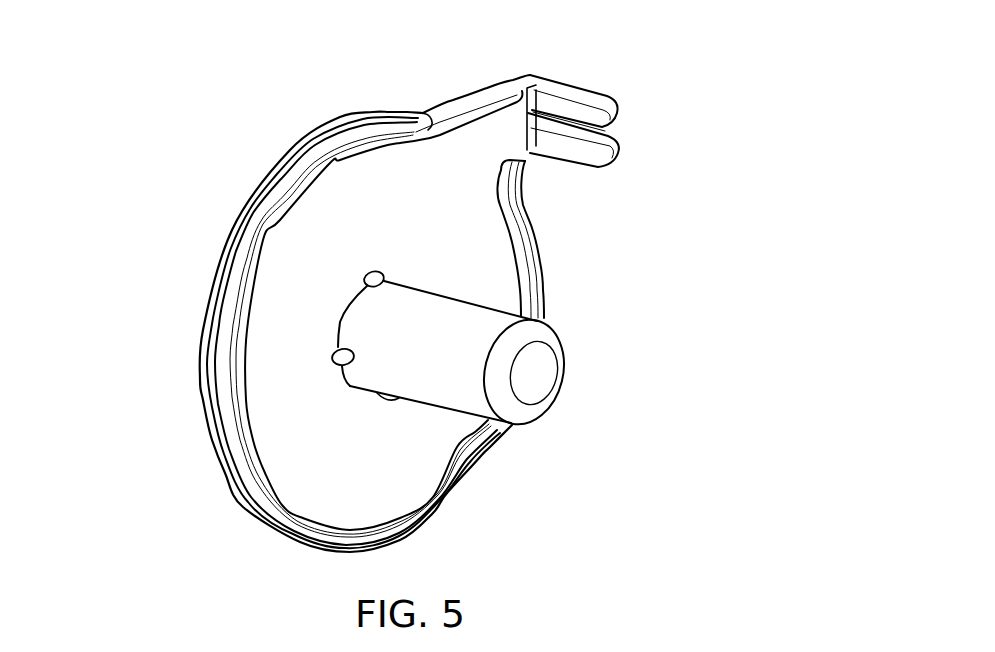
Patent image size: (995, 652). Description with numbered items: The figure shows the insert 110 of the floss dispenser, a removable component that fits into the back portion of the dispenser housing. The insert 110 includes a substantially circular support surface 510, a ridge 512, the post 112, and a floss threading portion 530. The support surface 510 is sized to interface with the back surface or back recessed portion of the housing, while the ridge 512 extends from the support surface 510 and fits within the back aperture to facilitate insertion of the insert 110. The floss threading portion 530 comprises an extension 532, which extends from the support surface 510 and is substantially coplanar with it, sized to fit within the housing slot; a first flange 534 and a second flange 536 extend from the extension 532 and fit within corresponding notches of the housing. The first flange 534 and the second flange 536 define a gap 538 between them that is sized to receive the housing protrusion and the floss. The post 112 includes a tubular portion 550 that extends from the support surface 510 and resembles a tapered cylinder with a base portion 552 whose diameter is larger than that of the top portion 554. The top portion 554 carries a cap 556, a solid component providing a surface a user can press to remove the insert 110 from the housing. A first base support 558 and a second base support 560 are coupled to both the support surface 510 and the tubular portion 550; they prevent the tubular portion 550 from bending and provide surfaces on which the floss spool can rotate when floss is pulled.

The insert 110 is at (190, 84).
The post 112 is at (588, 397).
The support surface 510 is at (289, 268).
The ridge 512 is at (223, 374).
The floss threading portion 530 is at (448, 84).
The extension 532 is at (505, 132).
The first flange 534 is at (560, 100).
The second flange 536 is at (570, 153).
The gap 538 is at (611, 134).
The tubular portion 550 is at (452, 390).
The base portion 552 is at (343, 377).
The top portion 554 is at (477, 393).
The cap 556 is at (542, 363).
The first base support 558 is at (368, 270).
The second base support 560 is at (332, 357).